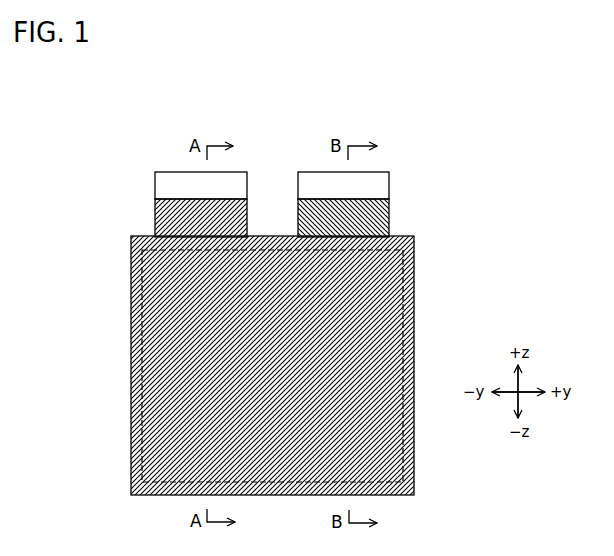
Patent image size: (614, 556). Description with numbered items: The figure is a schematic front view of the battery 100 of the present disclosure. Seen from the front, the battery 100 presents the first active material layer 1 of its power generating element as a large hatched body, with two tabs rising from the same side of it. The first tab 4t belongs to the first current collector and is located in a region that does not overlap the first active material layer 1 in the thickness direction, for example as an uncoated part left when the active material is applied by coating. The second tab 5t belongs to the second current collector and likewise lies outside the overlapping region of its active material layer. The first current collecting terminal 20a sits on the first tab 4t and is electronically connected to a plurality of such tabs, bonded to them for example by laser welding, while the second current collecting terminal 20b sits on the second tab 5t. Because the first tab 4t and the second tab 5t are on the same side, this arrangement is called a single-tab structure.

The battery 100 is at (413, 131).
The first active material layer 1 is at (405, 287).
The first current collecting terminal 20a is at (170, 186).
The second current collecting terminal 20b is at (375, 186).
The first tab 4t is at (170, 226).
The second tab 5t is at (375, 226).